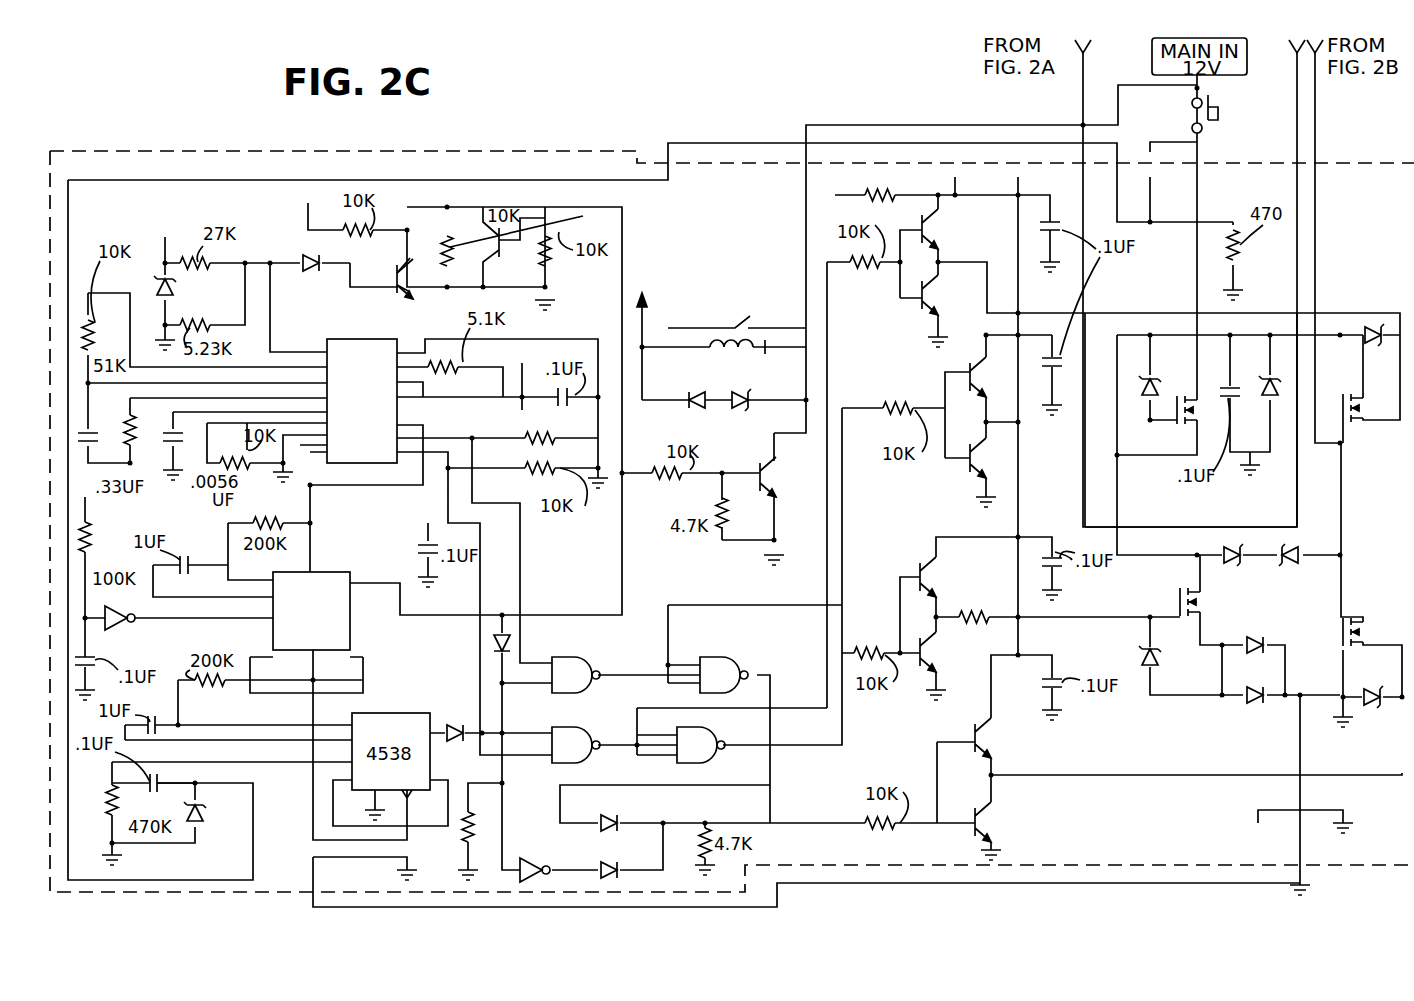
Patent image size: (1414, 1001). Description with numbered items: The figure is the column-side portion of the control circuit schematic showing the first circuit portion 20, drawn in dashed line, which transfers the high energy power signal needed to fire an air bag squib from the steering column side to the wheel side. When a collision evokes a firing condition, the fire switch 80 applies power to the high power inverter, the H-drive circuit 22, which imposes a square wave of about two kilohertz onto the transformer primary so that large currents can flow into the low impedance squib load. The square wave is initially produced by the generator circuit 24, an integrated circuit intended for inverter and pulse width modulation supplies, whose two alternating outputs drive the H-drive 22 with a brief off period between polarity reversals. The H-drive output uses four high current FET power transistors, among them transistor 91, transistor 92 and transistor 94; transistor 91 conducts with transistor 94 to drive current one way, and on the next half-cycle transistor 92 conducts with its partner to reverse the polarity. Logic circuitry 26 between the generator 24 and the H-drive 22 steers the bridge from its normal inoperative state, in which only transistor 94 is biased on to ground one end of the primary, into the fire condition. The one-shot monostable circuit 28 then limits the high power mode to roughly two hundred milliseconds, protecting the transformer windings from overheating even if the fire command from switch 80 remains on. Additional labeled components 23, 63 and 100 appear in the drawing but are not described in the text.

The first circuit portion 20 is at (238, 893).
The H-drive circuit 22 is at (1205, 835).
The voltage regulator circuit 23 is at (1150, 472).
The generator circuit 24 is at (372, 345).
The logic circuitry 26 is at (758, 662).
The one-shot circuit 28 is at (395, 663).
The MOSFET switch 63 is at (1373, 405).
The fire switch 80 is at (1188, 104).
The FET power transistor 91 is at (1190, 382).
The FET power transistor 92 is at (1175, 593).
The FET power transistor 94 is at (1383, 630).
The resistor 100 is at (990, 591).